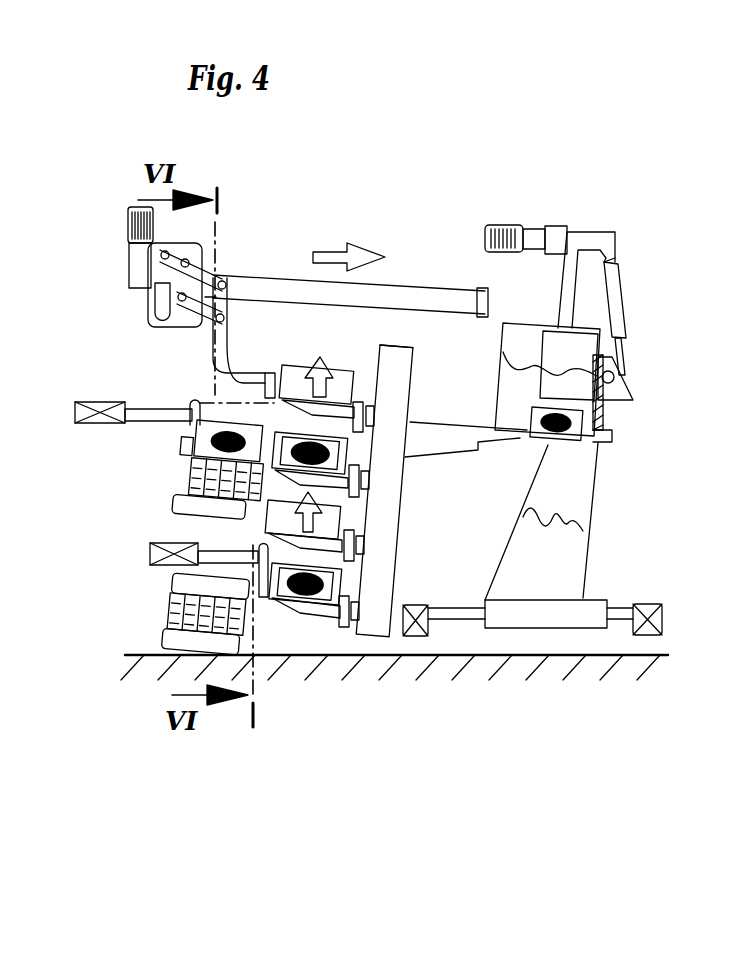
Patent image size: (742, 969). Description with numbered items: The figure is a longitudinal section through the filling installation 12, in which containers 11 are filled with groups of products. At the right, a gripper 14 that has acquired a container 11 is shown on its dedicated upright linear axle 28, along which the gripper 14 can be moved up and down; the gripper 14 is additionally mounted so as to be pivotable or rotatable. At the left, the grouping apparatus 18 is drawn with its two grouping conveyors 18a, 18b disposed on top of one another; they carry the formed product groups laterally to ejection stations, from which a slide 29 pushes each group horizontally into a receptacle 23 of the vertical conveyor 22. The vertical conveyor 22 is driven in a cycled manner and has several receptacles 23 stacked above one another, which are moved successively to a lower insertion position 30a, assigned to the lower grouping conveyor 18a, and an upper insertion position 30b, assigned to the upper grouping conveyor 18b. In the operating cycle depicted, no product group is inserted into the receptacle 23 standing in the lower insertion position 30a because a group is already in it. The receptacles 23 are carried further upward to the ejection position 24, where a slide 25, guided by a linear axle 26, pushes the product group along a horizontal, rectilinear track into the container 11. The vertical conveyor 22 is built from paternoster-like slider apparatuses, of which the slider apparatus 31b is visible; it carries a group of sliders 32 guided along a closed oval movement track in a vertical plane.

The container 11 is at (582, 363).
The filling installation 12 is at (417, 198).
The gripper 14 is at (610, 430).
The grouping apparatus 18 is at (188, 660).
The lower grouping conveyor 18a is at (172, 632).
The upper grouping conveyor 18b is at (197, 425).
The vertical conveyor 22 is at (382, 642).
The receptacle 23 is at (298, 602).
The ejection position 24 is at (367, 368).
The slide 25 is at (262, 392).
The linear axle 26 is at (293, 290).
The linear axle 28 is at (585, 240).
The slide 29 is at (160, 413).
The lower insertion position 30a is at (345, 637).
The upper insertion position 30b is at (360, 495).
The slider apparatus 31b is at (397, 350).
The slider 32 is at (360, 548).